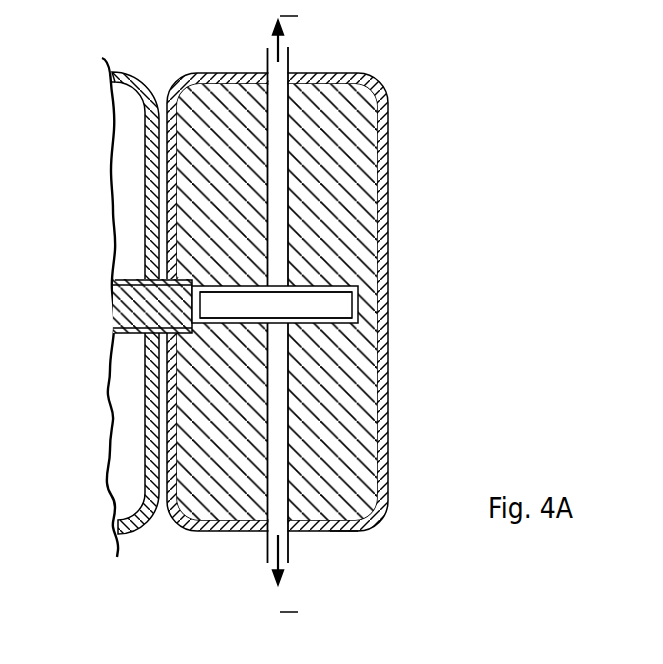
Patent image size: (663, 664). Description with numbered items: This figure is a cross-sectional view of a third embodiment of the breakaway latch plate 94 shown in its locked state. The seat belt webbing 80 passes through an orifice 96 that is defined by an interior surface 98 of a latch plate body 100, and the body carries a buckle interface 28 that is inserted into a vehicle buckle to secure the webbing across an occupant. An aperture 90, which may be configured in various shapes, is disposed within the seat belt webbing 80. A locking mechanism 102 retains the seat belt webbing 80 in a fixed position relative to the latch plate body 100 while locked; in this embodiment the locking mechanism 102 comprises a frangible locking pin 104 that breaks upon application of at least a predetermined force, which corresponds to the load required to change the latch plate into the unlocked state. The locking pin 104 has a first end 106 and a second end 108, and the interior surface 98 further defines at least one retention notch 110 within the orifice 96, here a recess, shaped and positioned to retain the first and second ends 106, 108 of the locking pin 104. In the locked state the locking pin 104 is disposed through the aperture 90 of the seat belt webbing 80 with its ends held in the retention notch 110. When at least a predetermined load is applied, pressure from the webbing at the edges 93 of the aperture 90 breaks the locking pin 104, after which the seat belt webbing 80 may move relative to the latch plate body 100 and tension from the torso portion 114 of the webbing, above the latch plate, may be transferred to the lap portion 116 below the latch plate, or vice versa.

The buckle interface 28 is at (130, 307).
The seat belt webbing 80 is at (280, 160).
The aperture 90 is at (255, 320).
The edges of the aperture 93 is at (268, 288).
The breakaway latch plate 94 is at (514, 226).
The orifice 96 is at (298, 483).
The interior surface 98 is at (338, 532).
The latch plate body 100 is at (357, 217).
The locking mechanism 102 is at (348, 270).
The locking pin 104 is at (236, 315).
The first end of the locking pin 106 is at (213, 300).
The second end of the locking pin 108 is at (380, 343).
The retention notch 110 is at (117, 287).
The torso portion of the seat belt webbing 114 is at (267, 58).
The lap portion of the seat belt webbing 116 is at (288, 548).